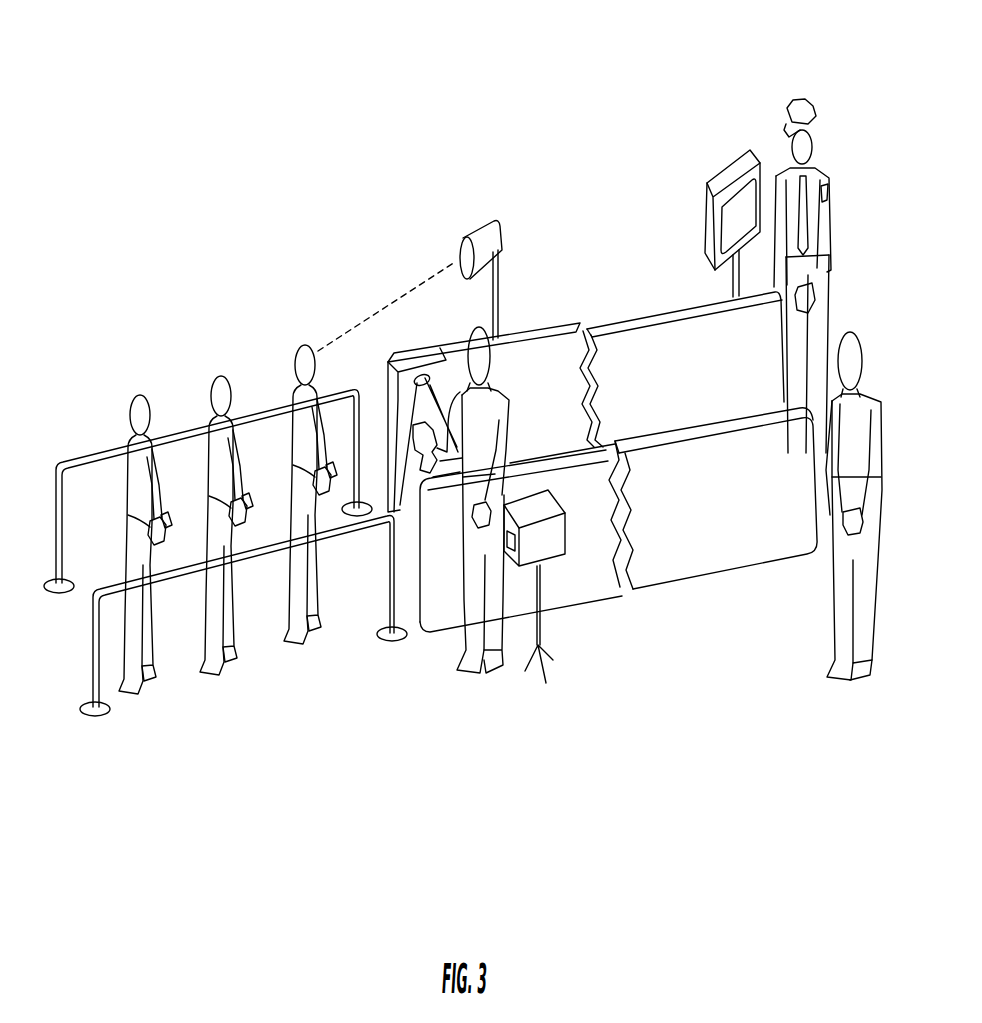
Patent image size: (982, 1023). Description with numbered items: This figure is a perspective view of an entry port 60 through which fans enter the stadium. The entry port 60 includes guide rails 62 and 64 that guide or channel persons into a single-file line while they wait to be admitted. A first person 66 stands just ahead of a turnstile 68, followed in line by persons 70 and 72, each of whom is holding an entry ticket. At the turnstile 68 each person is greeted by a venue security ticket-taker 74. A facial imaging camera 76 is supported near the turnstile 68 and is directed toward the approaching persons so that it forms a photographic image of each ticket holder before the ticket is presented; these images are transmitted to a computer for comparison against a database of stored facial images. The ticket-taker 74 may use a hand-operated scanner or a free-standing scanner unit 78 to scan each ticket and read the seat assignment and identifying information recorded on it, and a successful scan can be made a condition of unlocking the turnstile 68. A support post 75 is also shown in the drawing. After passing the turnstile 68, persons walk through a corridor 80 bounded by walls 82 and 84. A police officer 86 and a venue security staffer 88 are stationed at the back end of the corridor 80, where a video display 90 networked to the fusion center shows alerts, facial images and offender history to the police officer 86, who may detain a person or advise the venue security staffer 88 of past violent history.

The entry port 60 is at (551, 265).
The guide rail 62 is at (254, 568).
The guide rail 64 is at (262, 412).
The first person 66 is at (302, 344).
The turnstile 68 is at (433, 347).
The person 70 is at (218, 375).
The person 72 is at (137, 394).
The venue security ticket-taker 74 is at (514, 345).
The scanner support post 75 is at (404, 506).
The facial imaging camera 76 is at (490, 220).
The free-standing scanner unit 78 is at (556, 568).
The corridor 80 is at (621, 261).
The wall 82 is at (639, 316).
The wall 84 is at (704, 575).
The police officer 86 is at (801, 100).
The venue security staffer 88 is at (852, 330).
The video display 90 is at (721, 168).